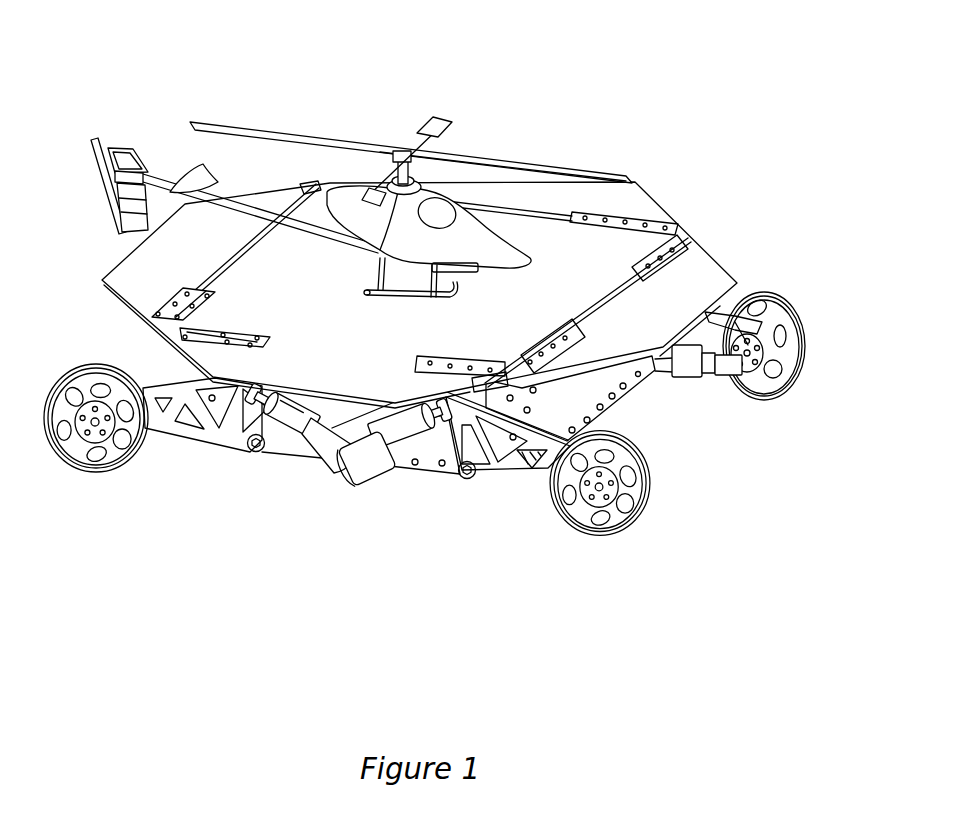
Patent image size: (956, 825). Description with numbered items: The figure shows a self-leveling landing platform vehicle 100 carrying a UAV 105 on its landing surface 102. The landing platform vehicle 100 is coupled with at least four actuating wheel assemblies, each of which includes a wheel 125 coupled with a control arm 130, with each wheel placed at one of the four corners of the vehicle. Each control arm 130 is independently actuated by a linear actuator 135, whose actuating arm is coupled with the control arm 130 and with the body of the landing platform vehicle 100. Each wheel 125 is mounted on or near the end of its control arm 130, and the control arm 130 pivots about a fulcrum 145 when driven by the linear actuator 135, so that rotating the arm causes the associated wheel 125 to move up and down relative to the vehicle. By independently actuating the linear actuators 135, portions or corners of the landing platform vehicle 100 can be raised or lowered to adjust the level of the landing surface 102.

The landing platform vehicle 100 is at (667, 135).
The landing surface 102 is at (512, 227).
The UAV 105 is at (424, 92).
The wheel 125 is at (92, 467).
The control arm 130 is at (177, 430).
The linear actuator 135 is at (293, 428).
The fulcrum 145 is at (253, 453).